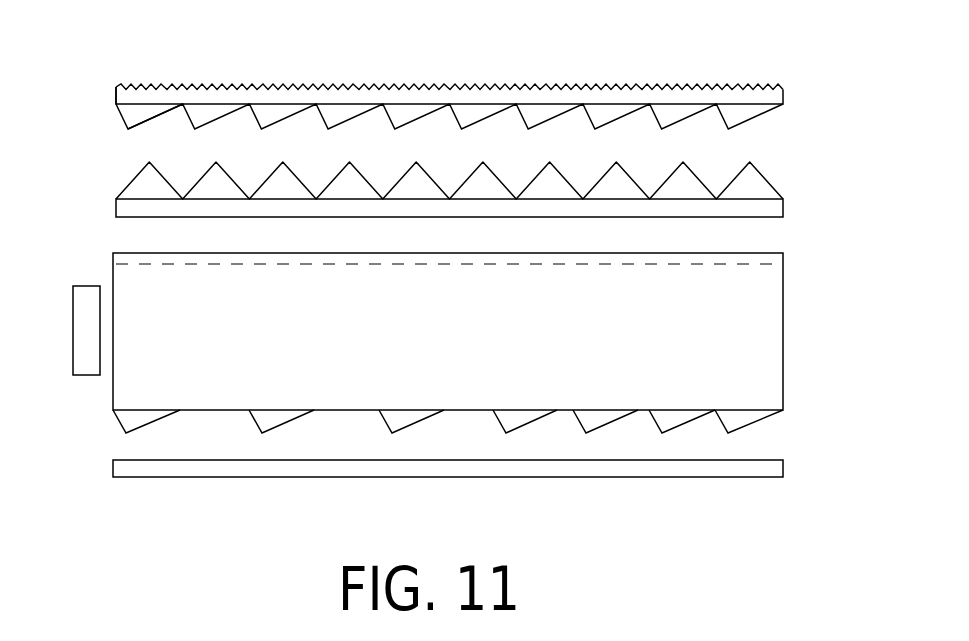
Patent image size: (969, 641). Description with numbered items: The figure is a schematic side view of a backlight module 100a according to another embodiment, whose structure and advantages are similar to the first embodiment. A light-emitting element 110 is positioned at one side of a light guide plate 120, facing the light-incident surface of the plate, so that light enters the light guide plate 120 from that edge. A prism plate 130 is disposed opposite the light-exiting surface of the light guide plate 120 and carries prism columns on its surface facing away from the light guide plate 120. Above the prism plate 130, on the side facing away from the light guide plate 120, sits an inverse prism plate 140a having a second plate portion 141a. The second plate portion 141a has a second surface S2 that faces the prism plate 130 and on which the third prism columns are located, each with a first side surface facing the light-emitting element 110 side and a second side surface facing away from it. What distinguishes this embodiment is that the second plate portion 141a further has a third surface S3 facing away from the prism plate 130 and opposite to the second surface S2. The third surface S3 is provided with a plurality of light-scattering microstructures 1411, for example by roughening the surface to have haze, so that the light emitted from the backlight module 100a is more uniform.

The backlight module 100a is at (100, 20).
The light-emitting element 110 is at (82, 334).
The light guide plate 120 is at (784, 328).
The prism plate 130 is at (784, 205).
The inverse prism plate 140a is at (456, 77).
The second plate portion 141a is at (113, 100).
The light-scattering microstructures 1411 is at (449, 54).
The third surface S3 is at (182, 86).
The second surface S2 is at (136, 108).